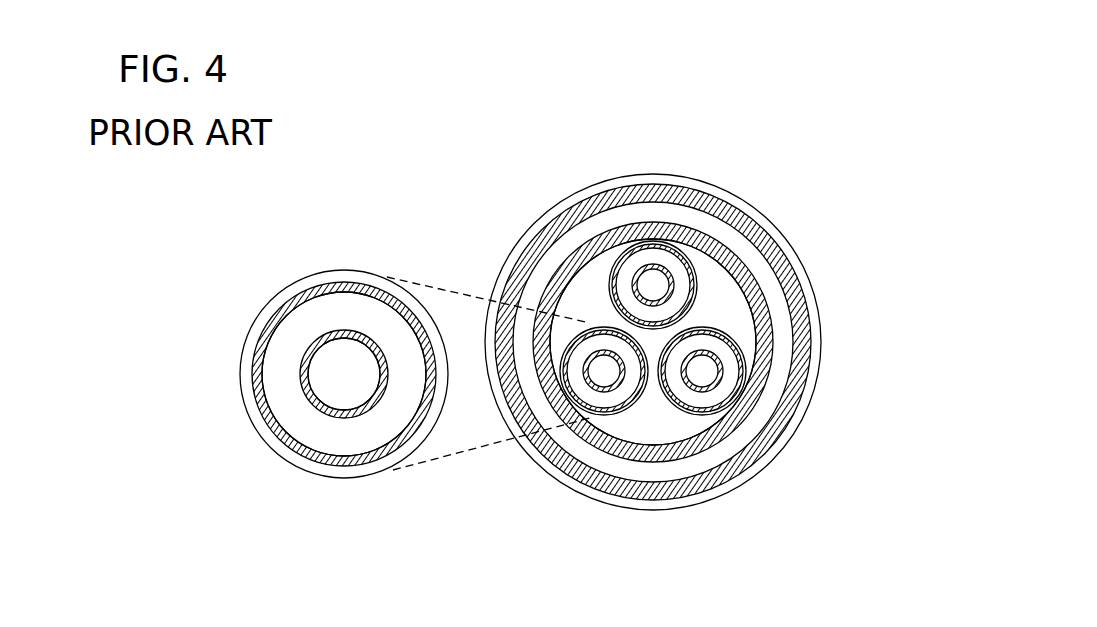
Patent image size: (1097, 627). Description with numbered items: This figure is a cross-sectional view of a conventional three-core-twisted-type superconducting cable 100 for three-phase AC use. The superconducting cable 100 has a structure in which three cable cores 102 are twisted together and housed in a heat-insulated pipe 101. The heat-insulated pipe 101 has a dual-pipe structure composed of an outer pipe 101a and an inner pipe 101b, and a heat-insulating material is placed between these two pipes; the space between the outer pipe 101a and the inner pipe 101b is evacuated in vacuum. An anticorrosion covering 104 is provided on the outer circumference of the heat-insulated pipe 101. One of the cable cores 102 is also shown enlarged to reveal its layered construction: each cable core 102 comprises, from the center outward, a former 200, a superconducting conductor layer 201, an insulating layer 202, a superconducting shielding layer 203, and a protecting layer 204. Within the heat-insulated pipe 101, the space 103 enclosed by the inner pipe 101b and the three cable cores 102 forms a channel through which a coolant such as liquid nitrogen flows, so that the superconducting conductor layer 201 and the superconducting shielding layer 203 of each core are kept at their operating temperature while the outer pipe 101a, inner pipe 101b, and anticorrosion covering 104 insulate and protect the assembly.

The superconducting cable 100 is at (544, 342).
The heat-insulated pipe 101 is at (707, 314).
The outer pipe 101a is at (780, 257).
The inner pipe 101b is at (705, 233).
The cable core 102 is at (457, 321).
The space 103 is at (740, 323).
The anticorrosion covering 104 is at (811, 401).
The former 200 is at (318, 370).
The superconducting conductor layer 201 is at (303, 392).
The insulating layer 202 is at (297, 422).
The superconducting shielding layer 203 is at (315, 468).
The protecting layer 204 is at (368, 468).